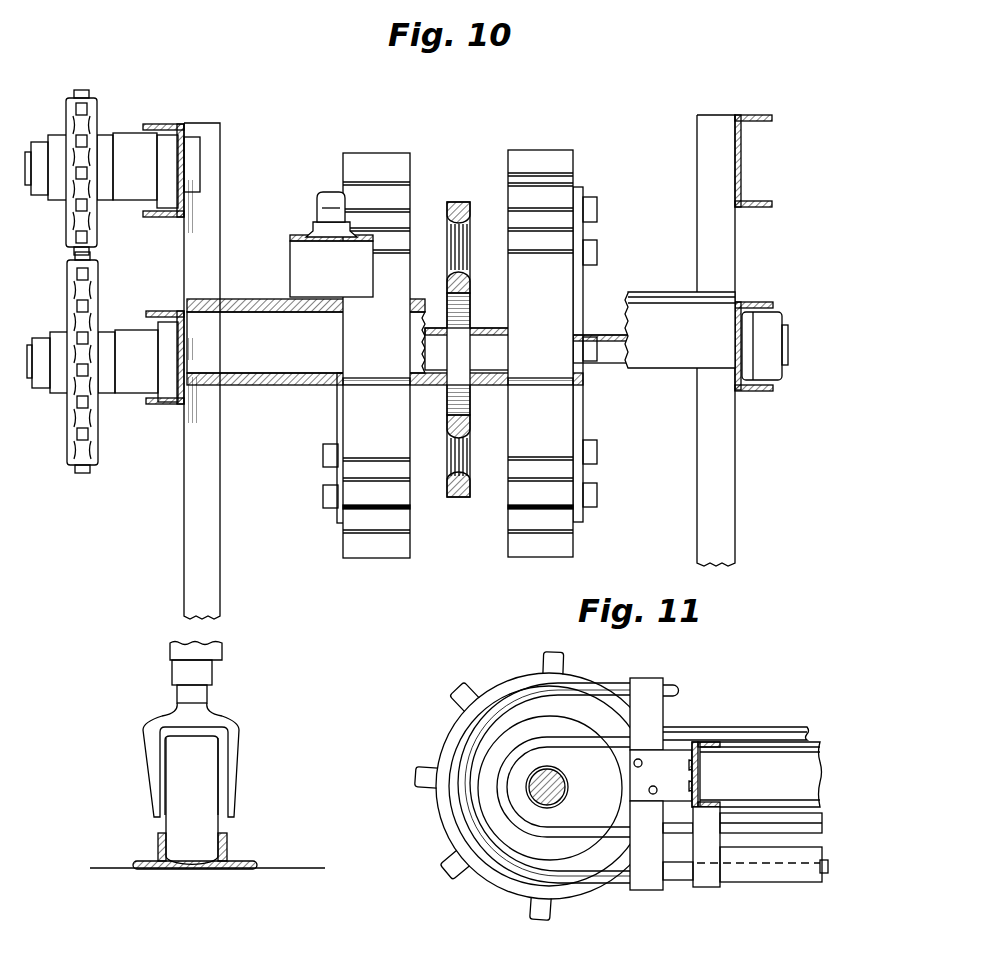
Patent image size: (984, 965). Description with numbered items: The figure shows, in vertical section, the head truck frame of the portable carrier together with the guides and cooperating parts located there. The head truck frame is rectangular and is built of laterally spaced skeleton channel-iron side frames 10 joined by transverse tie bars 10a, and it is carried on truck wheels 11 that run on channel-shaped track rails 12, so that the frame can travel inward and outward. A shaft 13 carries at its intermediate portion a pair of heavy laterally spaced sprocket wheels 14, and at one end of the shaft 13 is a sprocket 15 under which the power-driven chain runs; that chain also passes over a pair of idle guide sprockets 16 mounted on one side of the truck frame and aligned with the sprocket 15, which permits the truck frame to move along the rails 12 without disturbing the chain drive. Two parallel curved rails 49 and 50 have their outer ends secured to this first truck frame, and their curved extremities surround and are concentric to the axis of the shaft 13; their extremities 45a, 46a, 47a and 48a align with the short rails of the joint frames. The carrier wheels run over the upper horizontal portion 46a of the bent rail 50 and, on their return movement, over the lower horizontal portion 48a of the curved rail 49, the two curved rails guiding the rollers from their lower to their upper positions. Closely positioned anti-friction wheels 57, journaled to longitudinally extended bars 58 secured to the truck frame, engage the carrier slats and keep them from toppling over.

In FIG. 10, the channel-iron side frames 10 is at (163, 125).
In FIG. 10, the transverse tie bars 10a is at (385, 342).
In FIG. 11, the transverse tie bars 10a is at (700, 776).
In FIG. 10, the truck wheels 11 is at (191, 753).
In FIG. 10, the track rails 12 is at (230, 858).
In FIG. 10, the shaft 13 is at (606, 338).
In FIG. 11, the shaft 13 is at (568, 788).
In FIG. 10, the sprocket wheels 14 is at (349, 164).
In FIG. 11, the sprocket wheels 14 is at (417, 773).
In FIG. 10, the sprocket 15 is at (88, 303).
In FIG. 10, the idle guide sprockets 16 is at (80, 111).
In FIG. 10, the curved rail 49 is at (465, 203).
In FIG. 11, the curved rail 49 is at (607, 687).
In FIG. 10, the curved rail 50 is at (469, 290).
In FIG. 11, the curved rail 50 is at (590, 742).
In FIG. 10, the anti-friction wheels 57 is at (320, 201).
In FIG. 10, the longitudinally extended bars 58 is at (316, 220).
In FIG. 11, the rail extremity 45a is at (679, 690).
In FIG. 11, the upper horizontal portion 46a is at (678, 737).
In FIG. 11, the rail extremity 47a is at (678, 835).
In FIG. 11, the lower horizontal portion 48a is at (682, 878).